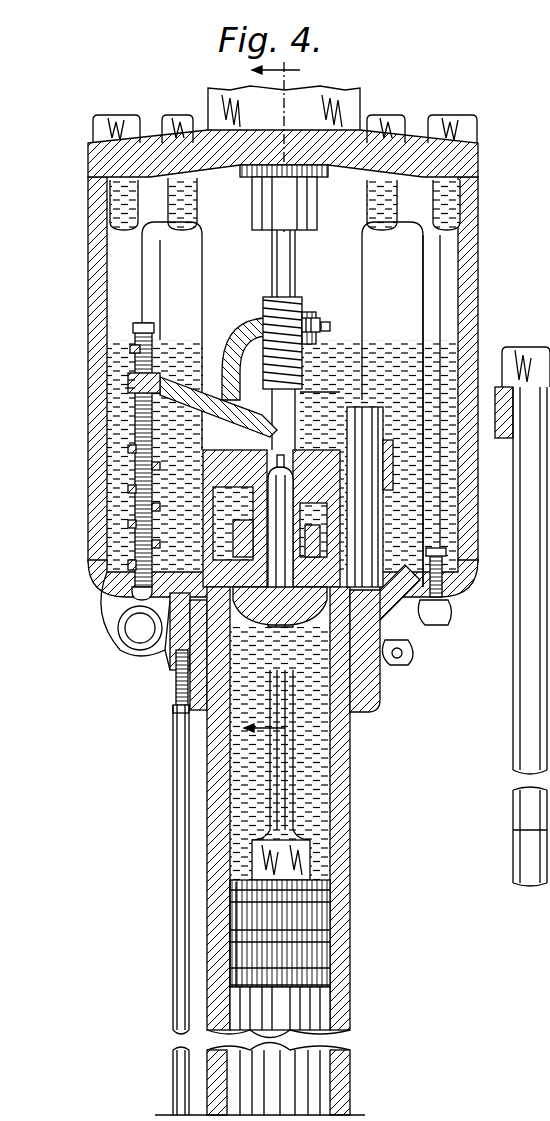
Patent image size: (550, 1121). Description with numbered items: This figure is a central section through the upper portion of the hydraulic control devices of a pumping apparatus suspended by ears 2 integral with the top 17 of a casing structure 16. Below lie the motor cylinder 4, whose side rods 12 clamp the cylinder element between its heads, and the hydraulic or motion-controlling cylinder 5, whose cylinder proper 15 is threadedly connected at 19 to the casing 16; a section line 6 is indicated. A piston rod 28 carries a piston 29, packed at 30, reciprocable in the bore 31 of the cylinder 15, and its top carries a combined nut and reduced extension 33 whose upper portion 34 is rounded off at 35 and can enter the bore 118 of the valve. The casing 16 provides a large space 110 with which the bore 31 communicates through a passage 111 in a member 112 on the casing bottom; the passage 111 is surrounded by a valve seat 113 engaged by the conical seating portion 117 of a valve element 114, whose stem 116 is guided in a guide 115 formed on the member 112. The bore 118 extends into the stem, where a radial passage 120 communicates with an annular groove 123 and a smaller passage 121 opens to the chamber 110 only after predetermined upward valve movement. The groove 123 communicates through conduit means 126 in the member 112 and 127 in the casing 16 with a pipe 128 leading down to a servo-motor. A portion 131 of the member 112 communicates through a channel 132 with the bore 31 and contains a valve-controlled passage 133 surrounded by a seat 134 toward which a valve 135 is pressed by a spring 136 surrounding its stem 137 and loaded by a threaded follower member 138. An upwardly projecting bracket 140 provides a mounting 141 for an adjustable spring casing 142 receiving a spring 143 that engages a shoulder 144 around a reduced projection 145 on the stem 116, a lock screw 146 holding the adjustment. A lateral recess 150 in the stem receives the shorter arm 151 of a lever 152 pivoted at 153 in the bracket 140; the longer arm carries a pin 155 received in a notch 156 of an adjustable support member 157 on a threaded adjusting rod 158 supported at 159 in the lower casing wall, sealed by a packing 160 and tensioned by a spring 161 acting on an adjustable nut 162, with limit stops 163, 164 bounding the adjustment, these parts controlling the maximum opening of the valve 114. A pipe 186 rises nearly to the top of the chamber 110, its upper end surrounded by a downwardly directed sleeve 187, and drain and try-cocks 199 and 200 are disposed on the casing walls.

The ears 2 is at (350, 112).
The motor cylinder 4 is at (513, 830).
The hydraulic or motion-controlling cylinder 5 is at (208, 905).
The section line 6 is at (262, 411).
The side rods 12 is at (522, 870).
The motion-controlling cylinder proper 15 is at (345, 998).
The casing structure 16 is at (479, 278).
The top of casing 17 is at (152, 135).
The threaded connection 19 is at (173, 708).
The piston rod 28 is at (285, 1072).
The piston 29 is at (237, 950).
The packing 30 is at (320, 945).
The bore 31 is at (325, 790).
The combined nut and reduced extension 33 is at (293, 865).
The upper portion 34 is at (287, 773).
The rounded end 35 is at (297, 697).
The space 110 is at (442, 268).
The passage 111 is at (135, 648).
The member 112 is at (128, 524).
The valve seat 113 is at (430, 640).
The valve element 114 is at (170, 640).
The guide 115 is at (385, 470).
The valve stem 116 is at (128, 593).
The conical seating portion 117 is at (372, 672).
The bore 118 is at (176, 700).
The passage 120 is at (375, 420).
The passage 121 is at (438, 314).
The annular internal groove 123 is at (440, 342).
The conduit means 126 is at (118, 628).
The conduit means 127 is at (176, 672).
The pipe 128 is at (180, 823).
The portion of member 131 is at (413, 552).
The channel 132 is at (408, 648).
The valve controlled passage 133 is at (380, 527).
The valve seat 134 is at (400, 540).
The valve 135 is at (447, 590).
The spring 136 is at (373, 507).
The valve stem 137 is at (300, 470).
The threaded follower member 138 is at (350, 430).
The bracket member 140 is at (236, 325).
The mounting 141 is at (310, 315).
The adjustable spring casing 142 is at (300, 300).
The spring 143 is at (265, 300).
The shoulder 144 is at (303, 392).
The reduced projection 145 is at (330, 333).
The lock screw 146 is at (316, 322).
The lateral recess 150 is at (128, 489).
The shorter arm 151 is at (128, 449).
The lever 152 is at (215, 390).
The pivot 153 is at (200, 380).
The pin 155 is at (128, 388).
The notch 156 is at (130, 380).
The adjustable support member 157 is at (135, 373).
The threaded adjusting rod 158 is at (135, 325).
The support 159 is at (128, 565).
The packing 160 is at (135, 597).
The spring 161 is at (152, 544).
The adjustable nut 162 is at (152, 507).
The limit stop 163 is at (132, 347).
The limit stop 164 is at (152, 466).
The pipe 186 is at (367, 163).
The sleeve 187 is at (318, 197).
The drain and try-cock 199 is at (412, 670).
The drain and try-cock 200 is at (450, 622).